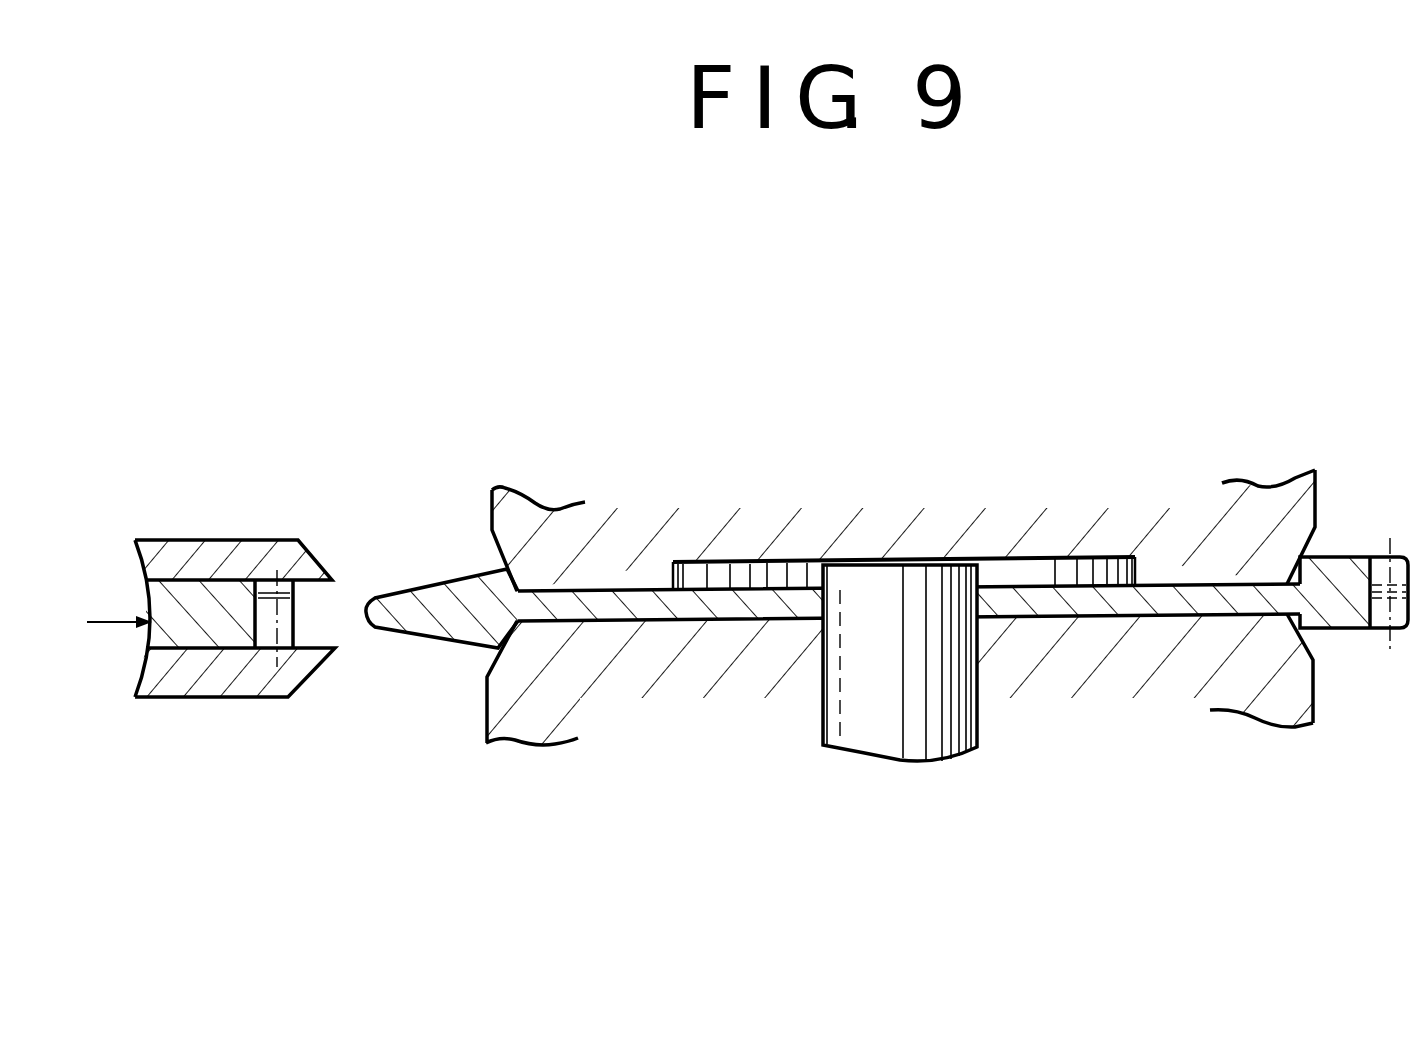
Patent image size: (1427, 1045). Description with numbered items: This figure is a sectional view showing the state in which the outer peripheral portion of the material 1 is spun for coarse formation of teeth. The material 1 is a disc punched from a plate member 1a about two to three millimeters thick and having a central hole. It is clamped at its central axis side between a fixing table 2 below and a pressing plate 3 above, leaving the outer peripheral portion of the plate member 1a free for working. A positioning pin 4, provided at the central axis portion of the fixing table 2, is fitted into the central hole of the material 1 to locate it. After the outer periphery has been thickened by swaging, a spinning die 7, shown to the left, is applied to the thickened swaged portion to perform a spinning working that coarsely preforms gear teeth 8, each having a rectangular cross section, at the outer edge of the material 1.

The material 1 is at (421, 566).
The plate member 1a is at (440, 620).
The fixing table 2 is at (585, 708).
The pressing plate 3 is at (612, 537).
The positioning pin 4 is at (960, 727).
The spinning die 7 is at (215, 540).
The gear teeth 8 is at (1380, 575).